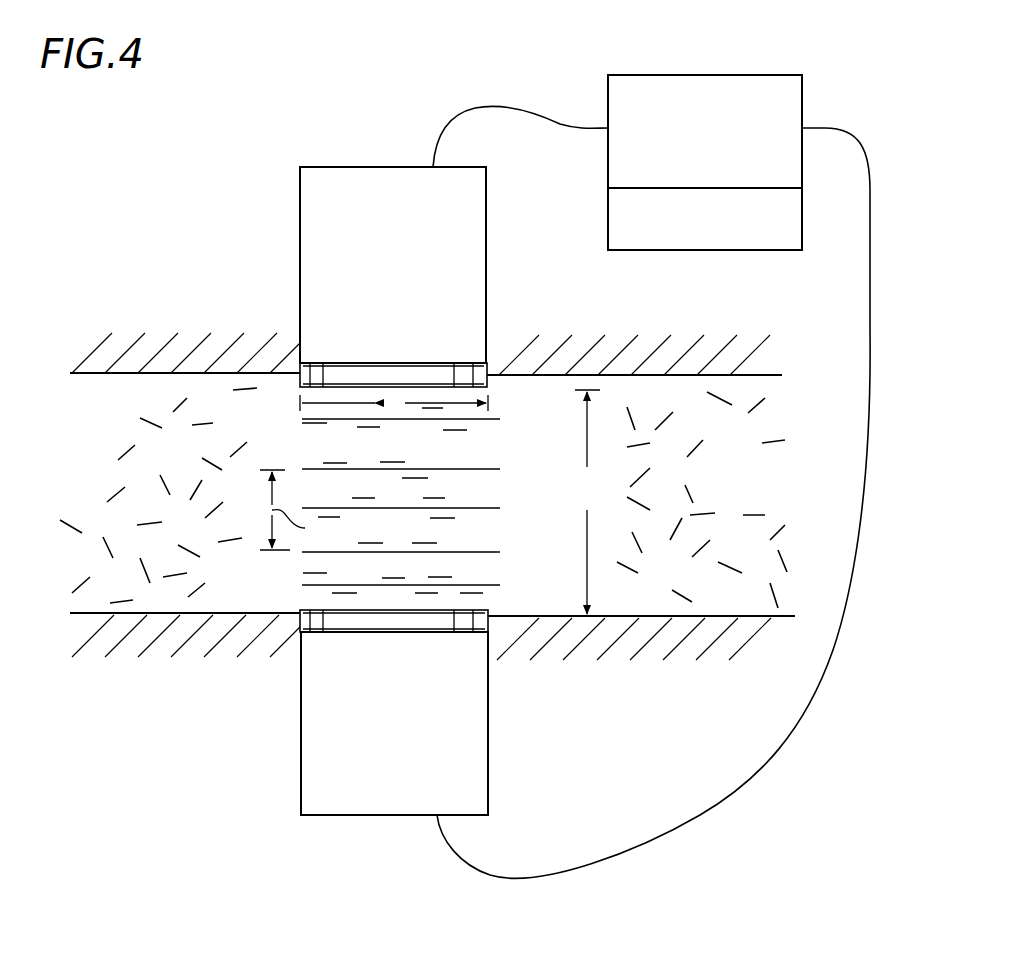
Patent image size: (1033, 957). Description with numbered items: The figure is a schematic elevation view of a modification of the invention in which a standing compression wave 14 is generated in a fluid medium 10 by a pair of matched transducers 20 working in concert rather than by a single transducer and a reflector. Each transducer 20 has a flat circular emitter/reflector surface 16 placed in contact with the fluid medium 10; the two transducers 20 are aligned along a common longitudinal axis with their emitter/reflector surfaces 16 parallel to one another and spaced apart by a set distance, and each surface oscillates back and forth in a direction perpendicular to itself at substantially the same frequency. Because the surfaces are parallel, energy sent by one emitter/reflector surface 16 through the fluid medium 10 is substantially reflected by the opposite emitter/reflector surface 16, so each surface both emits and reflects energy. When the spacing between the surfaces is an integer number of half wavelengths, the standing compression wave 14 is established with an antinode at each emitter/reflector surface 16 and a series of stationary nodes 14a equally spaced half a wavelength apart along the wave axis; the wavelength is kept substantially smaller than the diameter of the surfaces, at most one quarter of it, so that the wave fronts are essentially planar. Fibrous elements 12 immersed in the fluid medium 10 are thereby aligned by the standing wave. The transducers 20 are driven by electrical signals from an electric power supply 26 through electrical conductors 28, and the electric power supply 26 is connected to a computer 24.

The fluid medium 10 is at (108, 417).
The fibrous elements 12 is at (118, 497).
The standing compression wave 14 is at (512, 414).
The stationary nodes 14a is at (437, 469).
The emitter/reflector surface 16 is at (320, 386).
The transducer 20 is at (333, 311).
The computer 24 is at (690, 250).
The electric power supply 26 is at (697, 73).
The electrical conductor 28 is at (503, 107).